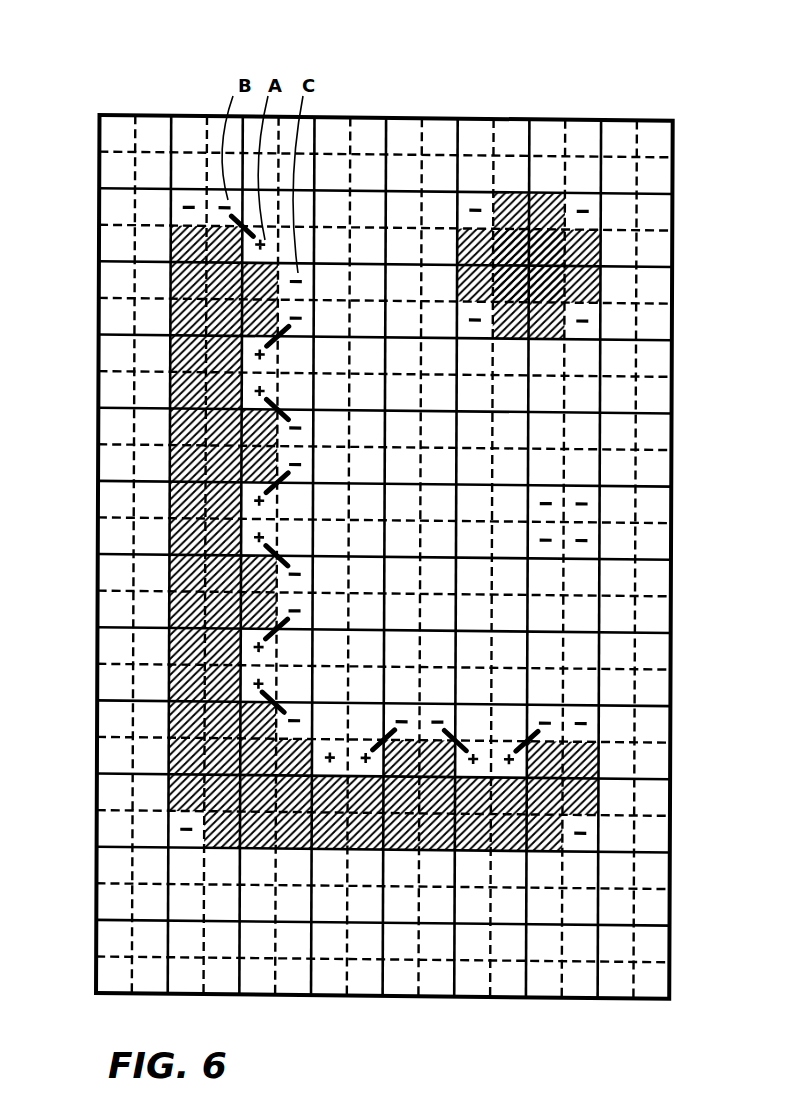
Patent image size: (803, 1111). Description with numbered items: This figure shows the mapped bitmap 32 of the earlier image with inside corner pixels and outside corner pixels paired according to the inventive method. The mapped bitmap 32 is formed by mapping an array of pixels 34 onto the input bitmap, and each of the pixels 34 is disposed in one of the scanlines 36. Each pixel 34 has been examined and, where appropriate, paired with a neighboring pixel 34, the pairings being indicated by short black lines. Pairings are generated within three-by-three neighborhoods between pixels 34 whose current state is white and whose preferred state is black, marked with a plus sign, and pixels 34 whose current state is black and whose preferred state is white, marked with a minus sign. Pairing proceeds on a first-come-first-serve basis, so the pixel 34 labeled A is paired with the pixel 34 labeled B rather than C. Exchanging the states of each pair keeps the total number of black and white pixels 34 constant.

The mapped bitmap 32 is at (100, 102).
The pixels 34 is at (447, 521).
The scanlines 36 is at (421, 184).